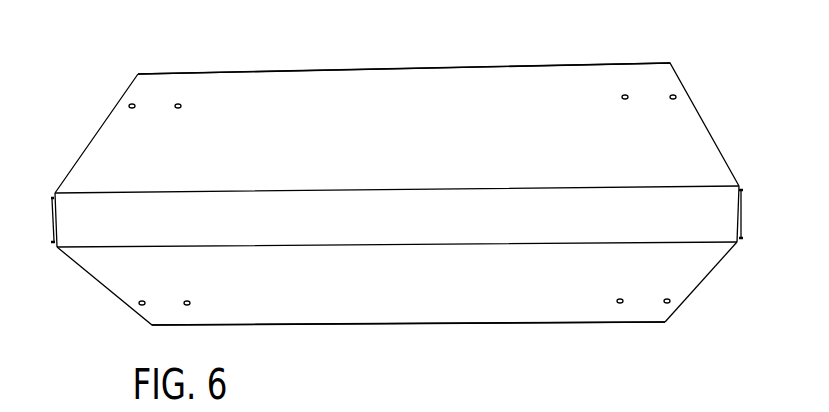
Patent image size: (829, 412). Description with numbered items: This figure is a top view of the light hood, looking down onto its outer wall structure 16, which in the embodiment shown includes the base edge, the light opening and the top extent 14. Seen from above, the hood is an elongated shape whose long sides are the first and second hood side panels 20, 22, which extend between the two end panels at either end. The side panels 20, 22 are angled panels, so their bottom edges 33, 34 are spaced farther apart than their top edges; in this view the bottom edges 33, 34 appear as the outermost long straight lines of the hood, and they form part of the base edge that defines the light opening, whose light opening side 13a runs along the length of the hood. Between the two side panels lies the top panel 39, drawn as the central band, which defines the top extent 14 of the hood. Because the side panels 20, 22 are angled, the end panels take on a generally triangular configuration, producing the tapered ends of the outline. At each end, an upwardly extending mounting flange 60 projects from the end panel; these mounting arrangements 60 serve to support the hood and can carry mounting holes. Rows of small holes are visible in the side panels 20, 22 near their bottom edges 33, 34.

The light opening side 13a is at (225, 72).
The top extent 14 is at (93, 235).
The outer wall structure 16 is at (613, 324).
The first hood side panel 20 is at (512, 300).
The second hood side panel 22 is at (512, 83).
The bottom edge of first side panel 33 is at (276, 325).
The bottom edge of second side panel 34 is at (343, 70).
The top panel 39 is at (678, 225).
The mounting flange 60 is at (50, 224).